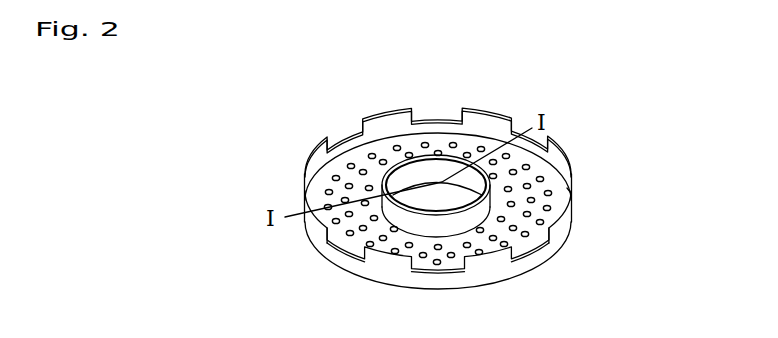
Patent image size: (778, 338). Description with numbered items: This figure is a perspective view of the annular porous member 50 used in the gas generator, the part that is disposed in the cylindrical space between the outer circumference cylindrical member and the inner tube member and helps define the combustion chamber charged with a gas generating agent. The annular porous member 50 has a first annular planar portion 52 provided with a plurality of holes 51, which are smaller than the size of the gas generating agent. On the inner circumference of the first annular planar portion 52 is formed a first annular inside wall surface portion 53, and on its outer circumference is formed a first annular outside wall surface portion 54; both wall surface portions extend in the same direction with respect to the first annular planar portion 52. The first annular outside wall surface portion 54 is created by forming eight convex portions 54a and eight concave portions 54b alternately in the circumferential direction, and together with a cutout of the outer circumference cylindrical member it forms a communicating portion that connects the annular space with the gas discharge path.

The annular porous member 50 is at (381, 105).
The holes 51 is at (346, 165).
The first annular planar portion 52 is at (435, 141).
The first annular inside wall surface portion 53 is at (438, 239).
The first annular outside wall surface portion 54 is at (452, 261).
The convex portions 54a is at (385, 262).
The concave portions 54b is at (333, 243).